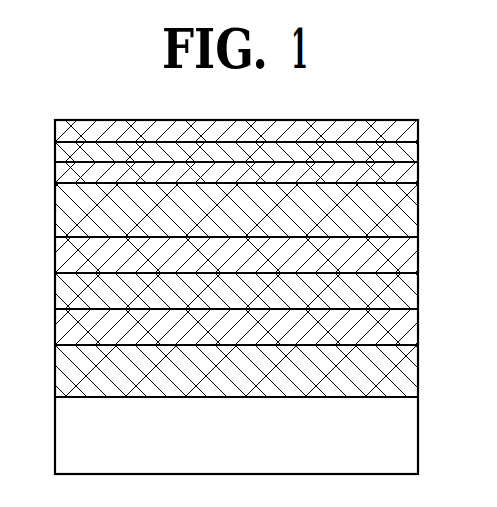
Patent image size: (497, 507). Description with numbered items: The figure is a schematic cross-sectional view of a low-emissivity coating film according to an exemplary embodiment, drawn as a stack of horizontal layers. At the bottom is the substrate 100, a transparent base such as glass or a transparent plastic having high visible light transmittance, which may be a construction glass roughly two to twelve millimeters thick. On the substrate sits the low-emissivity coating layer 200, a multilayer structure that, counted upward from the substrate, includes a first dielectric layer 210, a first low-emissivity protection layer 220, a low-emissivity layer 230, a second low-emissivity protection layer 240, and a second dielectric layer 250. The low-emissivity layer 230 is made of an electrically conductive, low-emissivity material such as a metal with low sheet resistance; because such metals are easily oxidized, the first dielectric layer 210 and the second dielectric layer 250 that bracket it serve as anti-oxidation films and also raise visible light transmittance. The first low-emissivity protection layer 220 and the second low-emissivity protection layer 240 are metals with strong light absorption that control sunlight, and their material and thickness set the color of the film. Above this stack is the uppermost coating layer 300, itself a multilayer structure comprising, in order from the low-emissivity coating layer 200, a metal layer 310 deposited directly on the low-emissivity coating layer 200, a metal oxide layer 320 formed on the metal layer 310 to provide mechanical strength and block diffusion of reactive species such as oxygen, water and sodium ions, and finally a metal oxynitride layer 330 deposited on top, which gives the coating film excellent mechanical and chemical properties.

The substrate 100 is at (53, 398).
The low-emissivity coating layer 200 is at (239, 290).
The first dielectric layer 210 is at (420, 377).
The first low-emissivity protection layer 220 is at (420, 326).
The low-emissivity layer 230 is at (420, 291).
The second low-emissivity protection layer 240 is at (420, 255).
The second dielectric layer 250 is at (420, 208).
The uppermost coating layer 300 is at (239, 153).
The metal layer 310 is at (420, 173).
The metal oxide layer 320 is at (420, 153).
The metal oxynitride layer 330 is at (420, 130).